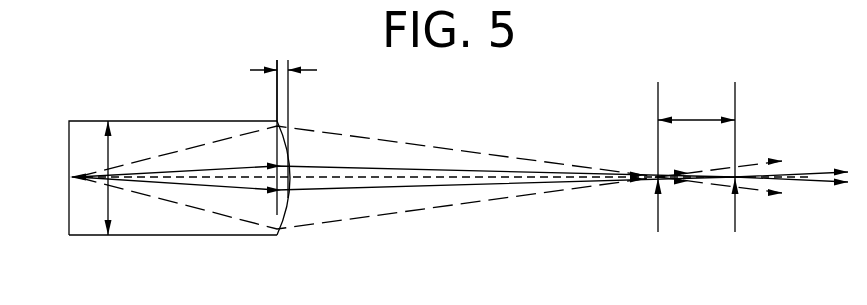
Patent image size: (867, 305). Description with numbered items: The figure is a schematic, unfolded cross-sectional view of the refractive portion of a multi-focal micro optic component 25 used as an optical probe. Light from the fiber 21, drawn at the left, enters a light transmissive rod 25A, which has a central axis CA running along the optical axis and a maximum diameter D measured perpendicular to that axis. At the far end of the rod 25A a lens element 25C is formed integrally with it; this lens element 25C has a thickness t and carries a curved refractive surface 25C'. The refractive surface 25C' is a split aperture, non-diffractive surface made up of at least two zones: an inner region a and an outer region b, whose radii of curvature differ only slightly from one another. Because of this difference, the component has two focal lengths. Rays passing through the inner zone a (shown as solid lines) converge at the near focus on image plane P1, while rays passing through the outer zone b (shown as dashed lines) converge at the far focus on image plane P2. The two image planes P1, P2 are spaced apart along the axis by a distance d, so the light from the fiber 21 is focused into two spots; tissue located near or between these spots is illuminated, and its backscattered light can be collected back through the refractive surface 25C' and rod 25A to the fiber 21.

The fiber 21 is at (70, 177).
The multifocal lens 25 is at (193, 180).
The light transmissive rod 25A is at (197, 238).
The lens element 25C is at (279, 207).
The curved refractive surface 25C' is at (328, 163).
The central axis CA is at (243, 90).
The maximum diameter D is at (120, 178).
The thickness t is at (291, 69).
The inner region a is at (300, 182).
The outer region b is at (303, 198).
The image plane P1 is at (635, 161).
The image plane P2 is at (784, 161).
The distance d is at (696, 108).